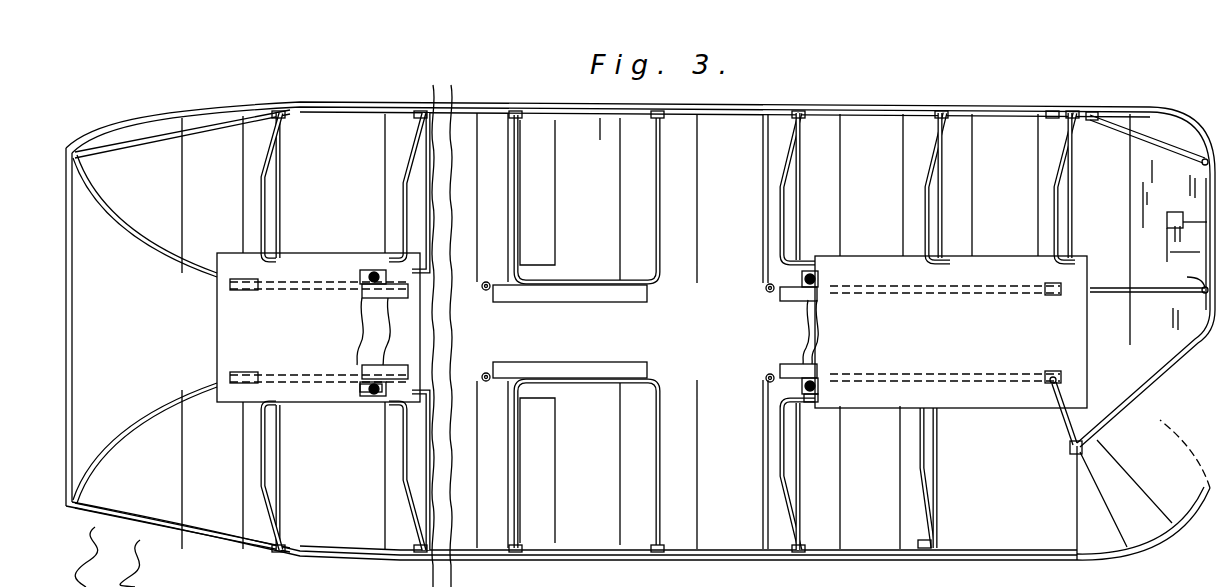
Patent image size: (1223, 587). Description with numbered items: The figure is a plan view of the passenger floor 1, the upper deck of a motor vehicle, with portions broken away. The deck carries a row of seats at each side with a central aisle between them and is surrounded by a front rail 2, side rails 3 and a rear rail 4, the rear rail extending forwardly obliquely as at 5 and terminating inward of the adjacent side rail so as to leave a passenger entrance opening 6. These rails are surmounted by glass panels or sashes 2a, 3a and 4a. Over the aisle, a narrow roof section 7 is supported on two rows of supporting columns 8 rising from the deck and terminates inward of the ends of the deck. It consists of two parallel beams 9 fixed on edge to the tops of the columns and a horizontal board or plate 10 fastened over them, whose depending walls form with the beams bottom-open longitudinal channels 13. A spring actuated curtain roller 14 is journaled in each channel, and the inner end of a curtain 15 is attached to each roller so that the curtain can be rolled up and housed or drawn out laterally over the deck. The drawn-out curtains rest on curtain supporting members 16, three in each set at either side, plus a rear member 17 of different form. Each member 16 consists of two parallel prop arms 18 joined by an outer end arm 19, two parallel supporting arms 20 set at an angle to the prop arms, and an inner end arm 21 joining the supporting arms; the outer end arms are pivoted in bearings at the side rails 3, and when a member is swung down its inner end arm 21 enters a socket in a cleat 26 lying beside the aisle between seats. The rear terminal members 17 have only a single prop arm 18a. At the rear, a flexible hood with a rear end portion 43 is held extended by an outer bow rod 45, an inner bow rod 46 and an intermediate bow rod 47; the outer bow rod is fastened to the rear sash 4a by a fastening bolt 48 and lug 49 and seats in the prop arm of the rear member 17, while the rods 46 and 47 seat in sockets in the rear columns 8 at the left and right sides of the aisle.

The passenger floor 1 is at (640, 344).
The front rail 2 is at (74, 358).
The front glass panel or sash 2a is at (80, 322).
The side rail 3 is at (438, 102).
The side glass panel or sash 3a is at (368, 106).
The rear rail 4 is at (1183, 248).
The rear glass panel or sash 4a is at (1187, 225).
The oblique portion of rear rail 5 is at (1160, 365).
The passenger entrance opening 6 is at (1075, 497).
The roof section 7 is at (652, 330).
The supporting column 8 is at (250, 288).
The beam 9 is at (389, 318).
The horizontal board or plate 10 is at (360, 338).
The longitudinal channel 13 is at (368, 394).
The spring actuated curtain roller 14 is at (376, 272).
The curtain 15 is at (364, 270).
The curtain supporting member 16 is at (338, 126).
The rear curtain supporting member 17 is at (1072, 130).
The prop arm 18 is at (565, 216).
The single prop arm 18a is at (1056, 192).
The outer end arm 19 is at (606, 118).
The supporting arm 20 is at (525, 285).
The inner end arm 21 is at (592, 302).
The cleat 26 is at (602, 362).
The rear end portion of hood 43 is at (1185, 279).
The outer bow rod 45 is at (1168, 150).
The inner bow rod 46 is at (1060, 425).
The intermediate bow rod 47 is at (1170, 296).
The fastening bolt 48 is at (1207, 158).
The lug 49 is at (1203, 166).